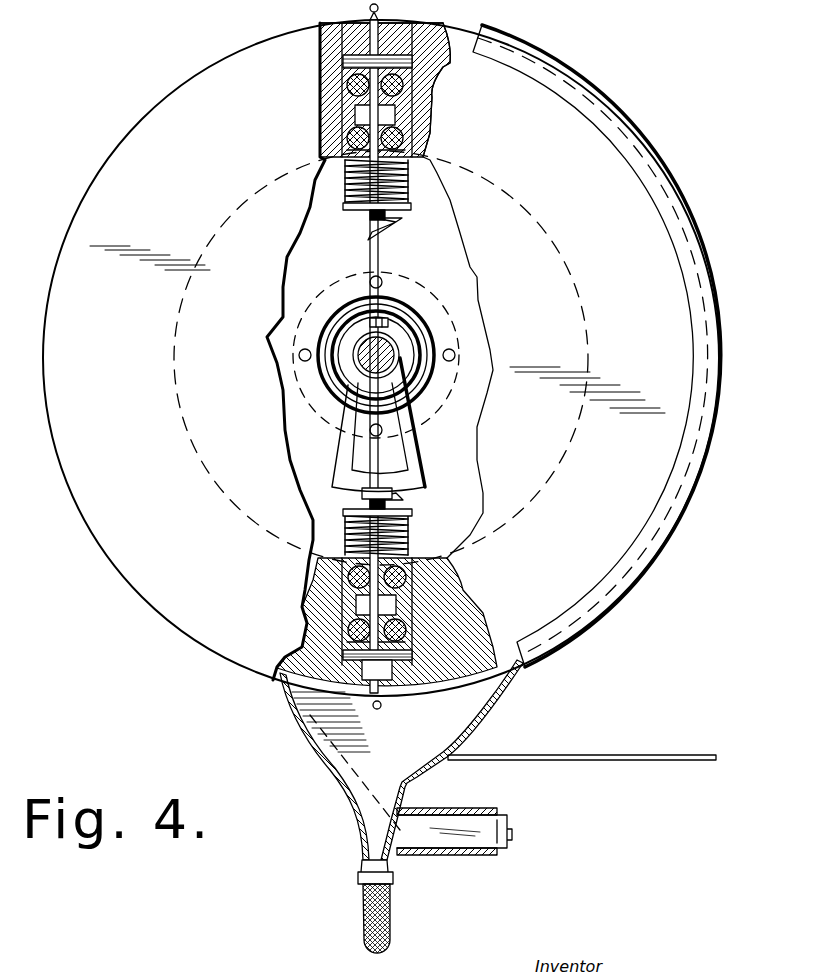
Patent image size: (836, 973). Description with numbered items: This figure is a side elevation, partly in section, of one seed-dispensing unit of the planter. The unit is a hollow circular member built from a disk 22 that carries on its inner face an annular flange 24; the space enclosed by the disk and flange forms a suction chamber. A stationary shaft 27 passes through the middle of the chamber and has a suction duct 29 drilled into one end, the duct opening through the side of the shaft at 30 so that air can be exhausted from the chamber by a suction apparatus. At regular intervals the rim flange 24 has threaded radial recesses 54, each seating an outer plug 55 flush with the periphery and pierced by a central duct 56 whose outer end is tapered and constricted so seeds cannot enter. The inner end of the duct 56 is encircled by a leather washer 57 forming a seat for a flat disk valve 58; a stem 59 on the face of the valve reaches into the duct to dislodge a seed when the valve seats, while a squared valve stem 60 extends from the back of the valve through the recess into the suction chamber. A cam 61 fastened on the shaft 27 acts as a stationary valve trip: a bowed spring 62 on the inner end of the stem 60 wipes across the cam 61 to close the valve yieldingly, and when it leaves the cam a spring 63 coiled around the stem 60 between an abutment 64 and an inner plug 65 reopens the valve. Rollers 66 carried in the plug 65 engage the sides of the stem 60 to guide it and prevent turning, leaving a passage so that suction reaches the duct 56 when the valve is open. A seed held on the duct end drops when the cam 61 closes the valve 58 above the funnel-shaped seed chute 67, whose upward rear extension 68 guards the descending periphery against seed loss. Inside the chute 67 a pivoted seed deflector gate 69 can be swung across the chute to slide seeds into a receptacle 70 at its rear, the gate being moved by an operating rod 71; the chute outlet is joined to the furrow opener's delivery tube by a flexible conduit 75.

The disk 22 is at (592, 152).
The annular flange 24 is at (405, 72).
The stationary shaft 27 is at (320, 380).
The suction duct 29 is at (376, 355).
The side opening of suction duct 30 is at (376, 355).
The radial recess 54 is at (388, 67).
The plug 55 is at (350, 35).
The duct 56 is at (382, 43).
The leather washer 57 is at (318, 70).
The valve 58 is at (323, 88).
The stem 59 is at (343, 57).
The valve stem 60 is at (365, 181).
The cam 61 is at (402, 361).
The spring 62 is at (392, 232).
The spring 63 is at (345, 190).
The abutment 64 is at (356, 215).
The plug 65 is at (407, 128).
The rollers 66 is at (357, 143).
The seed chute 67 is at (295, 722).
The upward rear extension 68 is at (672, 540).
The seed deflector gate 69 is at (447, 760).
The receptacle 70 is at (470, 853).
The operating rod 71 is at (593, 755).
The flexible conduit 75 is at (390, 940).